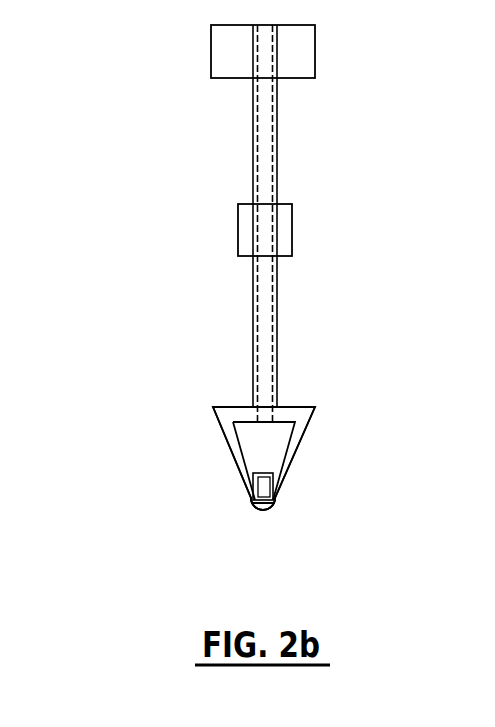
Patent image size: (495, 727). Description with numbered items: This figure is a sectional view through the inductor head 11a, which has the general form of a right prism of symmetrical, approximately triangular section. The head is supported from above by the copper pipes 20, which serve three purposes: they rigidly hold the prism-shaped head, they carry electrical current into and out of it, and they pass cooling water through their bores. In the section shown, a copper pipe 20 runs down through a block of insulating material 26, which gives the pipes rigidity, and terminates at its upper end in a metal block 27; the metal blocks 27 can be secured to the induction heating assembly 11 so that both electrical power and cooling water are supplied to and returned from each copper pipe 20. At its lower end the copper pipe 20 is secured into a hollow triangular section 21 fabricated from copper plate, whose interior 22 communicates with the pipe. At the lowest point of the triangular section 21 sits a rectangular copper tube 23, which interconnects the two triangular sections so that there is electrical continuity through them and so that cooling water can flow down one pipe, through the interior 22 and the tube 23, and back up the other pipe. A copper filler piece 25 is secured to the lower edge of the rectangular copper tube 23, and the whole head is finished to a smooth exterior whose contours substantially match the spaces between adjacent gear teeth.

The induction heating assembly 11 is at (296, 290).
The inductor head 11a is at (220, 450).
The copper pipe 20 is at (272, 323).
The hollow triangular section 21 is at (302, 412).
The interior of hollow triangular section 22 is at (275, 442).
The rectangular copper tube 23 is at (263, 488).
The copper filler piece 25 is at (360, 530).
The block of insulating material 26 is at (283, 223).
The metal block 27 is at (302, 48).